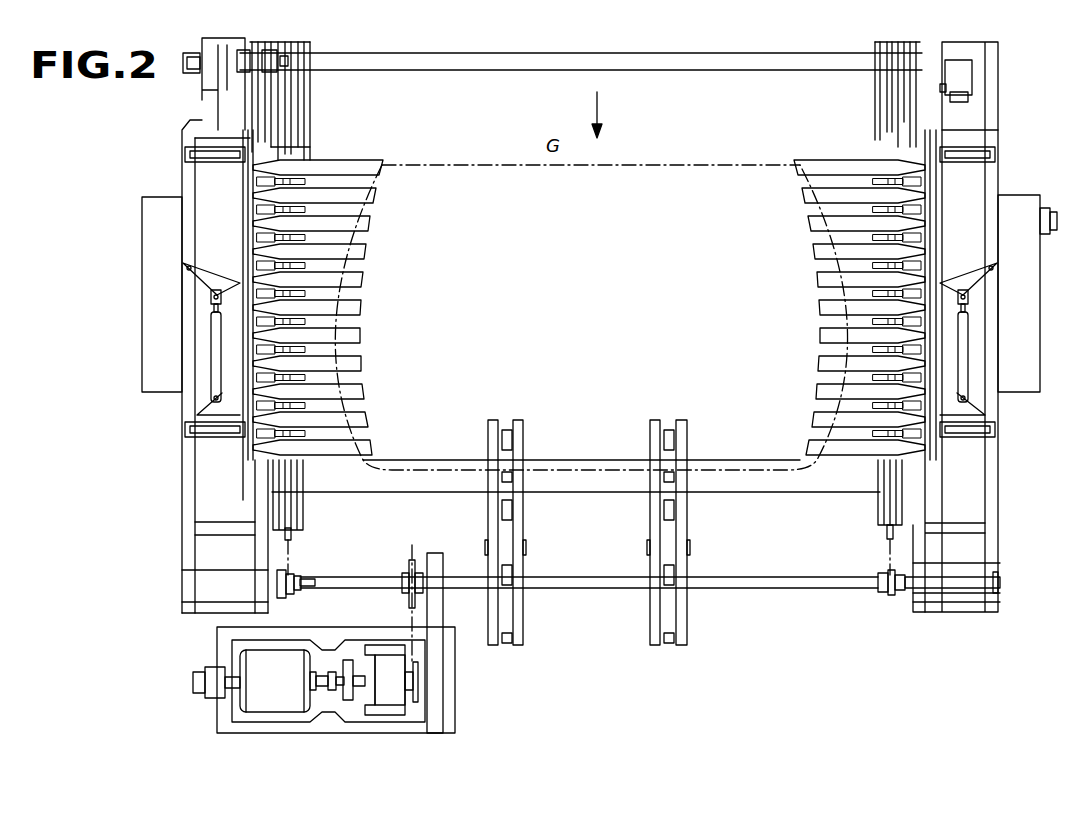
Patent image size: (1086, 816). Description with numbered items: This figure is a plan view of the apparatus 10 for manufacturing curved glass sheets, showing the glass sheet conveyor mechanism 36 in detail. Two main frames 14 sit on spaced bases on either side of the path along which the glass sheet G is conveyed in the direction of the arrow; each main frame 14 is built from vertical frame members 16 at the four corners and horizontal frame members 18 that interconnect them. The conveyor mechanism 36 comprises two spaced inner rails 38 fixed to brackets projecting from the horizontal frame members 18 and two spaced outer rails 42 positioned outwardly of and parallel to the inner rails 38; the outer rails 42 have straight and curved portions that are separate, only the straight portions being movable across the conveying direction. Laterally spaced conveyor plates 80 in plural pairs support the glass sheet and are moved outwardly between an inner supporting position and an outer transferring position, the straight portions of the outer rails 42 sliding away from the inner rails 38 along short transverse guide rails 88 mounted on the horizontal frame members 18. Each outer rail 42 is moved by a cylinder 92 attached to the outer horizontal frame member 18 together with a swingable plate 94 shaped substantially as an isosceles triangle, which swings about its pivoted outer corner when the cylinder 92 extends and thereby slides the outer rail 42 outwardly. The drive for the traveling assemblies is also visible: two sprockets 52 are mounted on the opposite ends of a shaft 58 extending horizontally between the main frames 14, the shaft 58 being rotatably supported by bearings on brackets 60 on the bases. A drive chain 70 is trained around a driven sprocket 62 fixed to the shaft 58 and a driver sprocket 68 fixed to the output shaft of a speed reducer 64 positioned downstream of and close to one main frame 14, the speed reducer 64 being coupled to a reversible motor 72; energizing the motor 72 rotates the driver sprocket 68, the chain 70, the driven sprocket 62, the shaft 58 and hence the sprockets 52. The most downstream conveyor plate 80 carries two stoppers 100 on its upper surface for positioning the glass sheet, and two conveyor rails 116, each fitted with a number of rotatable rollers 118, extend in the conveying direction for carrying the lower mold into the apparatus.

The apparatus for manufacturing curved glass sheets 10 is at (838, 608).
The main frame 14 is at (595, 329).
The vertical frame member 16 is at (185, 587).
The horizontal frame member 18 is at (190, 548).
The glass sheet conveyor mechanism 36 is at (368, 107).
The inner rail 38 is at (306, 152).
The outer rail 42 is at (245, 139).
The sprocket 52 is at (293, 569).
The shaft 58 is at (591, 590).
The bracket 60 is at (280, 597).
The driven sprocket 62 is at (412, 562).
The speed reducer 64 is at (331, 644).
The driver sprocket 68 is at (457, 698).
The drive chain 70 is at (427, 633).
The reversible motor 72 is at (258, 695).
The conveyor plate 80 is at (355, 168).
The transverse guide rail 88 is at (202, 434).
The cylinder 92 is at (208, 345).
The swingable plate 94 is at (200, 277).
The stopper 100 is at (513, 472).
The conveyor rail 116 is at (618, 537).
The rotatable roller 118 is at (517, 500).